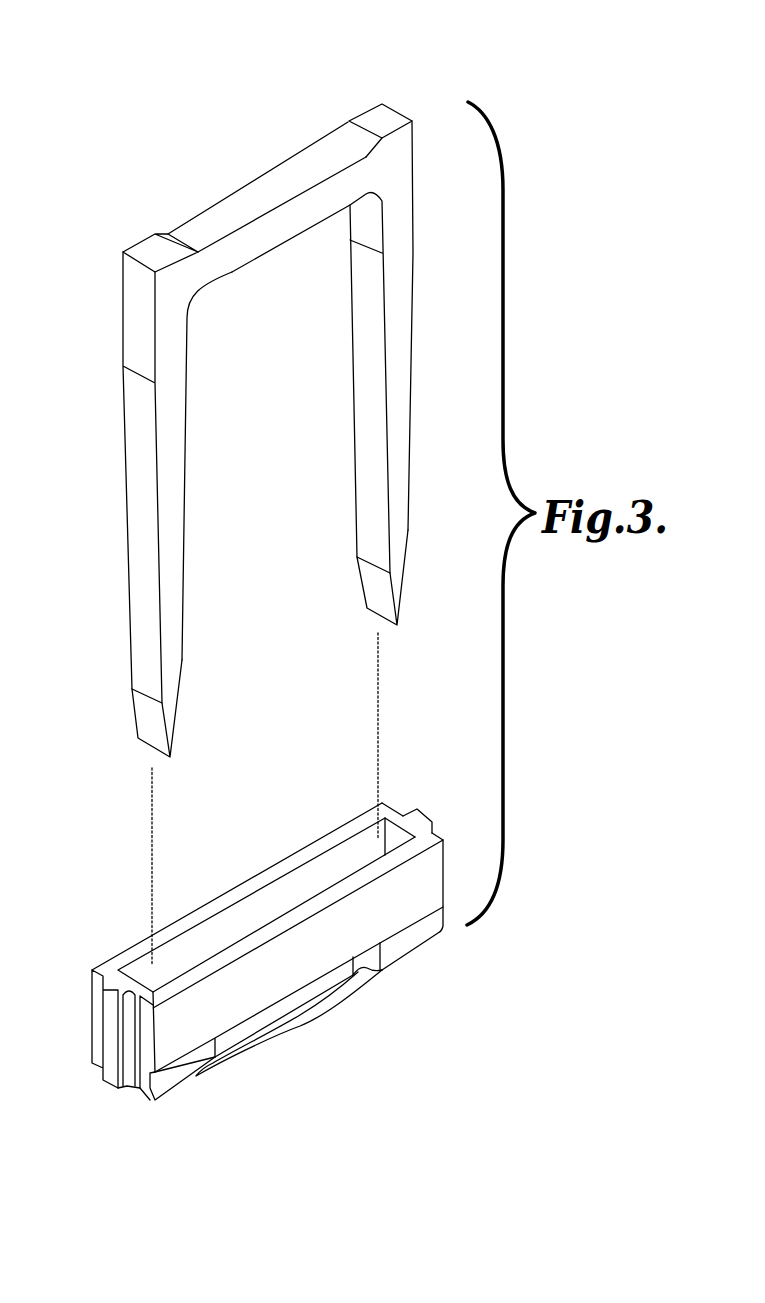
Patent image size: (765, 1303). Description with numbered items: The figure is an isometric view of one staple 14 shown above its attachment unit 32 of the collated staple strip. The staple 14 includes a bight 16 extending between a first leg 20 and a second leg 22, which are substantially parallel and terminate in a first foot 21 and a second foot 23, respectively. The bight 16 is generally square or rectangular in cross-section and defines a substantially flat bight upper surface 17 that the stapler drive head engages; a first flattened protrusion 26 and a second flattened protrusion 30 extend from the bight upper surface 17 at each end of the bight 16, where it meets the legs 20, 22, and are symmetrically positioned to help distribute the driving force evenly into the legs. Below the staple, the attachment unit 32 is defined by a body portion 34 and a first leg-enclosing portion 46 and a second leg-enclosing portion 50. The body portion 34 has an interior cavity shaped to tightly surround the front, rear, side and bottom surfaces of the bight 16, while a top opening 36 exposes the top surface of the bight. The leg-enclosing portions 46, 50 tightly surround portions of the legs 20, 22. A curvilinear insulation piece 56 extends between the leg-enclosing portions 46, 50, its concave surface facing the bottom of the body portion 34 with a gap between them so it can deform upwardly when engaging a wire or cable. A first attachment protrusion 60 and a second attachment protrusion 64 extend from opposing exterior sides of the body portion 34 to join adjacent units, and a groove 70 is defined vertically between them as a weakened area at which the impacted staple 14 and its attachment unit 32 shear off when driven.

The staple 14 is at (95, 255).
The bight 16 is at (225, 203).
The bight upper surface 17 is at (273, 183).
The first leg 20 is at (128, 553).
The first foot 21 is at (145, 718).
The second leg 22 is at (357, 470).
The second foot 23 is at (367, 587).
The first flattened protrusion 26 is at (150, 243).
The second flattened protrusion 30 is at (390, 120).
The attachment unit 32 is at (223, 875).
The body portion 34 is at (272, 877).
The top opening 36 is at (302, 885).
The first leg-enclosing portion 46 is at (183, 1075).
The second leg-enclosing portion 50 is at (403, 947).
The insulation piece 56 is at (303, 1020).
The first attachment protrusion 60 is at (117, 987).
The second attachment protrusion 64 is at (420, 814).
The groove 70 is at (150, 1105).